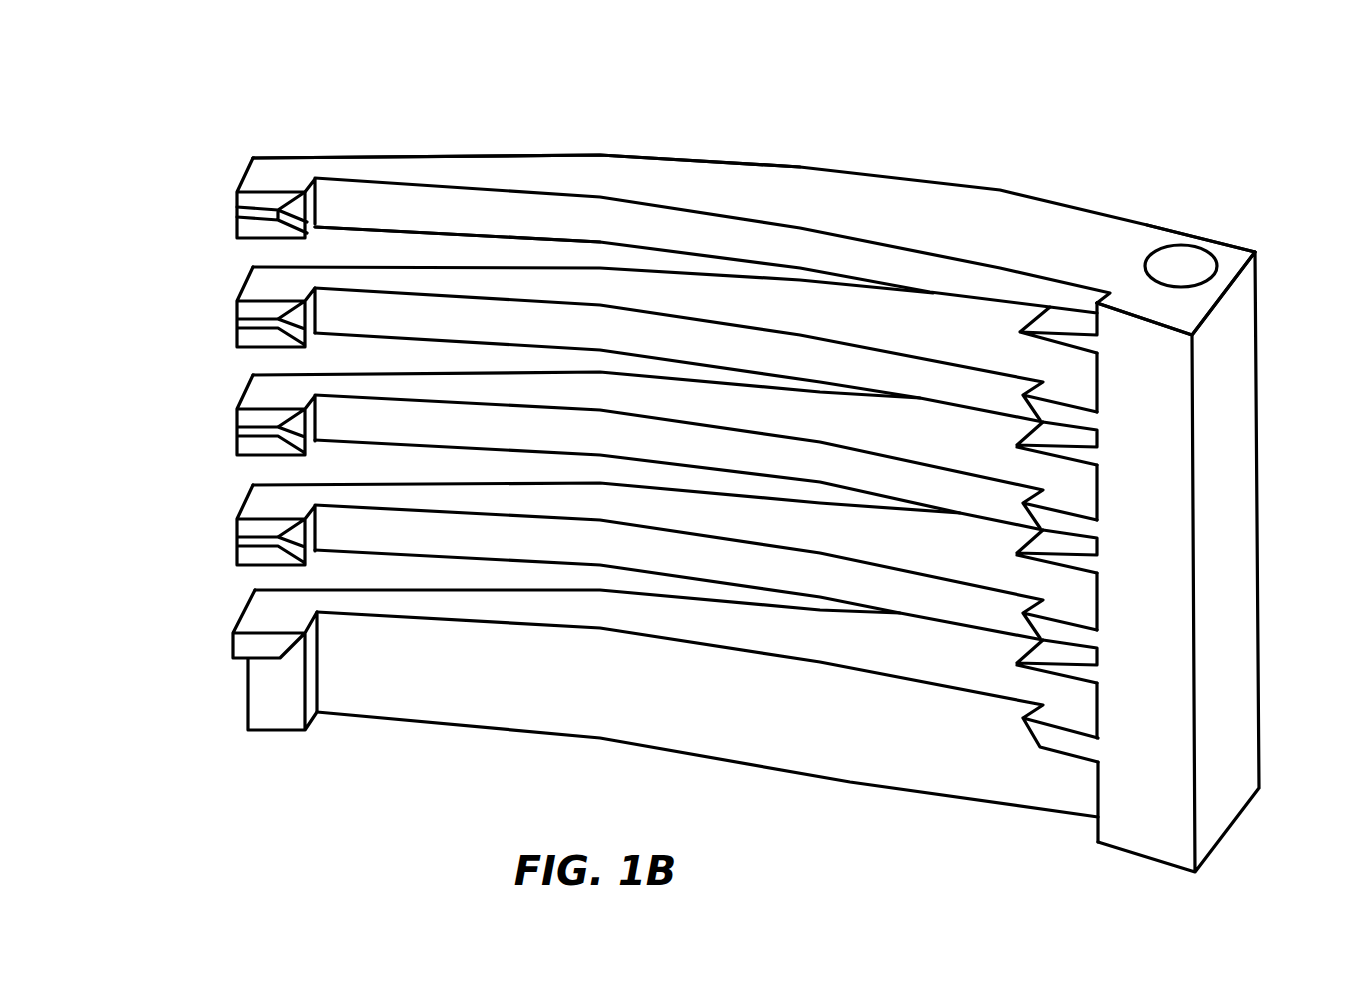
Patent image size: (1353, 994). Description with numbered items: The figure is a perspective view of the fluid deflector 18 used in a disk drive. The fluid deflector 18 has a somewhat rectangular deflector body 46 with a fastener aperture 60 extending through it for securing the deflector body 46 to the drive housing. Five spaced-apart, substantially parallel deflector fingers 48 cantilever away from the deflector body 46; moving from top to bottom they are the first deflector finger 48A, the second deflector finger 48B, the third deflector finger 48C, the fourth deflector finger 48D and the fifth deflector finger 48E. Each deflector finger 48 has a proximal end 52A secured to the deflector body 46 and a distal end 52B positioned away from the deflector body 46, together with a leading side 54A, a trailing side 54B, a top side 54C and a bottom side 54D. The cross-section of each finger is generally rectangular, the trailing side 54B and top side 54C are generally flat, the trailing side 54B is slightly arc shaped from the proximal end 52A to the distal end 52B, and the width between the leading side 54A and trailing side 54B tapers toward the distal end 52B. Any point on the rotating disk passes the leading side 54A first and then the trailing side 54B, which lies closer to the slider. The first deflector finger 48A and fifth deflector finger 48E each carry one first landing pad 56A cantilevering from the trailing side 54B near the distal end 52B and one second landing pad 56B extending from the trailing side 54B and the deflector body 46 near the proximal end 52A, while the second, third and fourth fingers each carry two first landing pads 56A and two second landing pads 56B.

The fluid deflector 18 is at (1116, 162).
The deflector body 46 is at (1230, 535).
The deflector finger 48 is at (451, 148).
The first deflector finger 48A is at (545, 168).
The second deflector finger 48B is at (612, 280).
The third deflector finger 48C is at (668, 385).
The fourth deflector finger 48D is at (668, 555).
The fifth deflector finger 48E is at (531, 698).
The proximal end 52A is at (1088, 243).
The distal end 52B is at (262, 172).
The leading side 54A is at (912, 182).
The trailing side 54B is at (395, 190).
The top side 54C is at (812, 190).
The bottom side 54D is at (348, 228).
The first landing pad 56A is at (243, 205).
The second landing pad 56B is at (1060, 296).
The fastener aperture 60 is at (1183, 265).